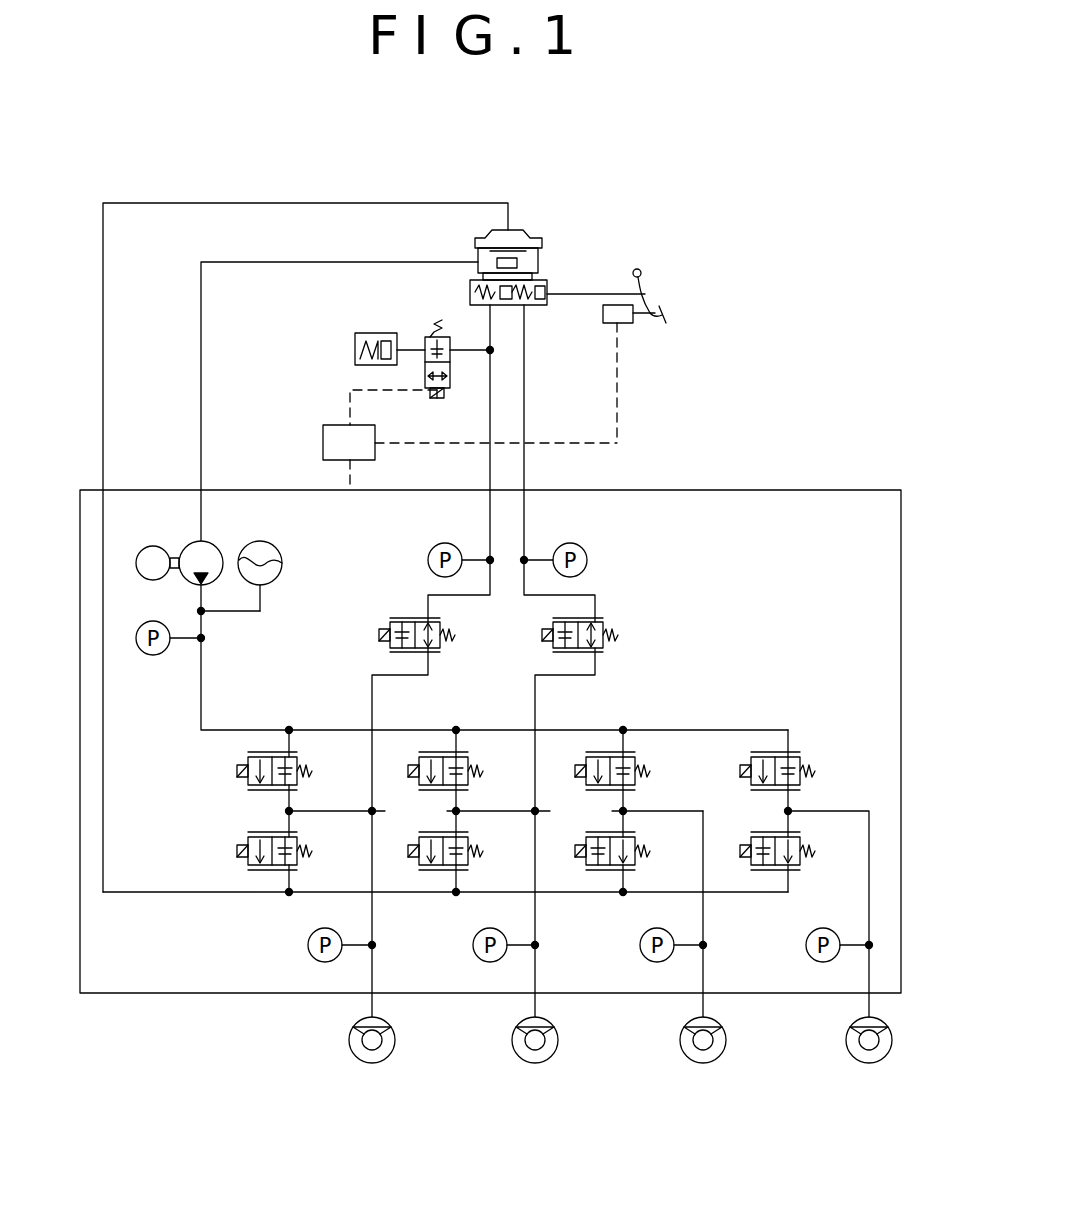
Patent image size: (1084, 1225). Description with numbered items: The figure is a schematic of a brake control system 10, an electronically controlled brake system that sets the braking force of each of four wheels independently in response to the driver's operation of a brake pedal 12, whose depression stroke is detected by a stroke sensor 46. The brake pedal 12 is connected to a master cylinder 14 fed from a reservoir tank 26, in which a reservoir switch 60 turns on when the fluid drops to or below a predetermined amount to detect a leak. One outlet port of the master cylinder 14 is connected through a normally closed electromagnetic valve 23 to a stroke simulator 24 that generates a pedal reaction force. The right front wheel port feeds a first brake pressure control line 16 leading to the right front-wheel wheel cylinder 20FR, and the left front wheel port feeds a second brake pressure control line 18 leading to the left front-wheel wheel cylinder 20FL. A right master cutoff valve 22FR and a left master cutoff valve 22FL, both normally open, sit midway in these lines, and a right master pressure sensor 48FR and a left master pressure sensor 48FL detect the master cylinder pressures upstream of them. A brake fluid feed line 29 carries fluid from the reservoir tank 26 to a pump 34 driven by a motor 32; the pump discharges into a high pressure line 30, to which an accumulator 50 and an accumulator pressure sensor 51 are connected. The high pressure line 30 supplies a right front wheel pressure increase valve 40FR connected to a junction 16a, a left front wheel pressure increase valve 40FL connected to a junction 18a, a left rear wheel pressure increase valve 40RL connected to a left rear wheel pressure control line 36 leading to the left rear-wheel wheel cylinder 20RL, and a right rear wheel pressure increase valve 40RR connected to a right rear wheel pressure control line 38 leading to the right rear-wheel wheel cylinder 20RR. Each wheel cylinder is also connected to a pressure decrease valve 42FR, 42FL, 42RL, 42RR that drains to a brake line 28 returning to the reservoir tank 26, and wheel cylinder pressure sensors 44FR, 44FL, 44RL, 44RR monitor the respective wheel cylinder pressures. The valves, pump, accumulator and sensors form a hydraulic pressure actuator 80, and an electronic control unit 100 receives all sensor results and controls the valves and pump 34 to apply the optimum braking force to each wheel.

The brake control system 10 is at (652, 225).
The brake pedal 12 is at (668, 317).
The master cylinder 14 is at (540, 305).
The first brake pressure control line 16 is at (458, 598).
The second brake pressure control line 18 is at (535, 600).
The junction 16a is at (376, 811).
The junction 18a is at (540, 811).
The right front-wheel wheel cylinder 20FR is at (352, 1027).
The left front-wheel wheel cylinder 20FL is at (515, 1027).
The left rear-wheel wheel cylinder 20RL is at (683, 1027).
The right rear-wheel wheel cylinder 20RR is at (849, 1027).
The right master cutoff valve 22FR is at (379, 636).
The left master cutoff valve 22FL is at (620, 635).
The electromagnetic valve 23 is at (442, 390).
The stroke simulator 24 is at (365, 333).
The reservoir tank 26 is at (515, 230).
The brake line 28 is at (103, 318).
The brake fluid feed line 29 is at (375, 262).
The high pressure line 30 is at (201, 630).
The motor 32 is at (157, 546).
The pump 34 is at (208, 543).
The left rear wheel pressure control line 36 is at (703, 818).
The right rear wheel pressure control line 38 is at (869, 862).
The right front wheel pressure increase valve 40FR is at (237, 771).
The left front wheel pressure increase valve 40FL is at (410, 757).
The left rear wheel pressure increase valve 40RL is at (577, 757).
The right rear wheel pressure increase valve 40RR is at (742, 757).
The right front wheel pressure decrease valve 42FR is at (237, 851).
The left front wheel pressure decrease valve 42FL is at (410, 865).
The left rear wheel pressure decrease valve 42RL is at (577, 865).
The right rear wheel pressure decrease valve 42RR is at (742, 865).
The right front-wheel wheel cylinder pressure sensor 44FR is at (308, 950).
The left front-wheel wheel cylinder pressure sensor 44FL is at (473, 950).
The left rear-wheel wheel cylinder pressure sensor 44RL is at (640, 950).
The right rear-wheel wheel cylinder pressure sensor 44RR is at (806, 950).
The stroke sensor 46 is at (622, 323).
The right master pressure sensor 48FR is at (436, 543).
The left master pressure sensor 48FL is at (575, 543).
The accumulator 50 is at (262, 542).
The accumulator pressure sensor 51 is at (153, 655).
The reservoir switch 60 is at (517, 265).
The hydraulic pressure actuator 80 is at (750, 490).
The electronic control unit 100 is at (323, 445).